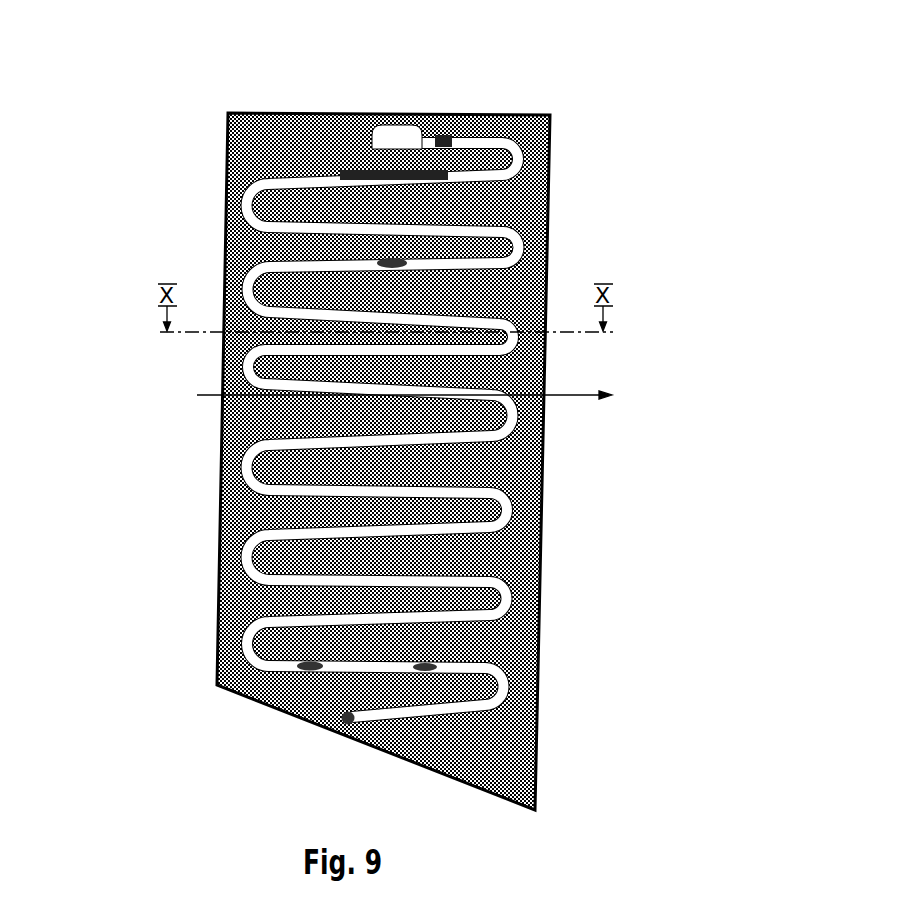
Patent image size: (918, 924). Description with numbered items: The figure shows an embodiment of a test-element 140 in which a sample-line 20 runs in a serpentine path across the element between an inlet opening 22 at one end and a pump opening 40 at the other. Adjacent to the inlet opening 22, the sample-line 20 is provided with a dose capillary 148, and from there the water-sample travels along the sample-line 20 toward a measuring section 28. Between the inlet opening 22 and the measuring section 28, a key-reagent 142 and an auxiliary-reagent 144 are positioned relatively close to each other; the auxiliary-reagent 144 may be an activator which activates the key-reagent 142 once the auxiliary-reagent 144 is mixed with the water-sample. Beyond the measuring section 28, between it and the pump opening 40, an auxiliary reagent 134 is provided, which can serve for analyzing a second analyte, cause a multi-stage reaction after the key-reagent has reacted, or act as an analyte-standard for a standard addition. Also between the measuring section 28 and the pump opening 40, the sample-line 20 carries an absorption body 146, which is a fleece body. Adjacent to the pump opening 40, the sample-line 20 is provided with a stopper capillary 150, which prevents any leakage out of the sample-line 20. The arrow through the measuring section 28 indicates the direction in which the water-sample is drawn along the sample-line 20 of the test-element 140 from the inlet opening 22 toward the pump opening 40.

The test-element 140 is at (368, 417).
The inlet opening 22 is at (343, 729).
The sample-line 20 is at (505, 531).
The measuring section 28 is at (370, 404).
The pump opening 40 is at (396, 137).
The stopper capillary 150 is at (441, 135).
The absorption body 146 is at (412, 183).
The auxiliary reagent 134 is at (380, 261).
The auxiliary-reagent 144 is at (304, 660).
The key-reagent 142 is at (430, 663).
The dose capillary 148 is at (356, 721).